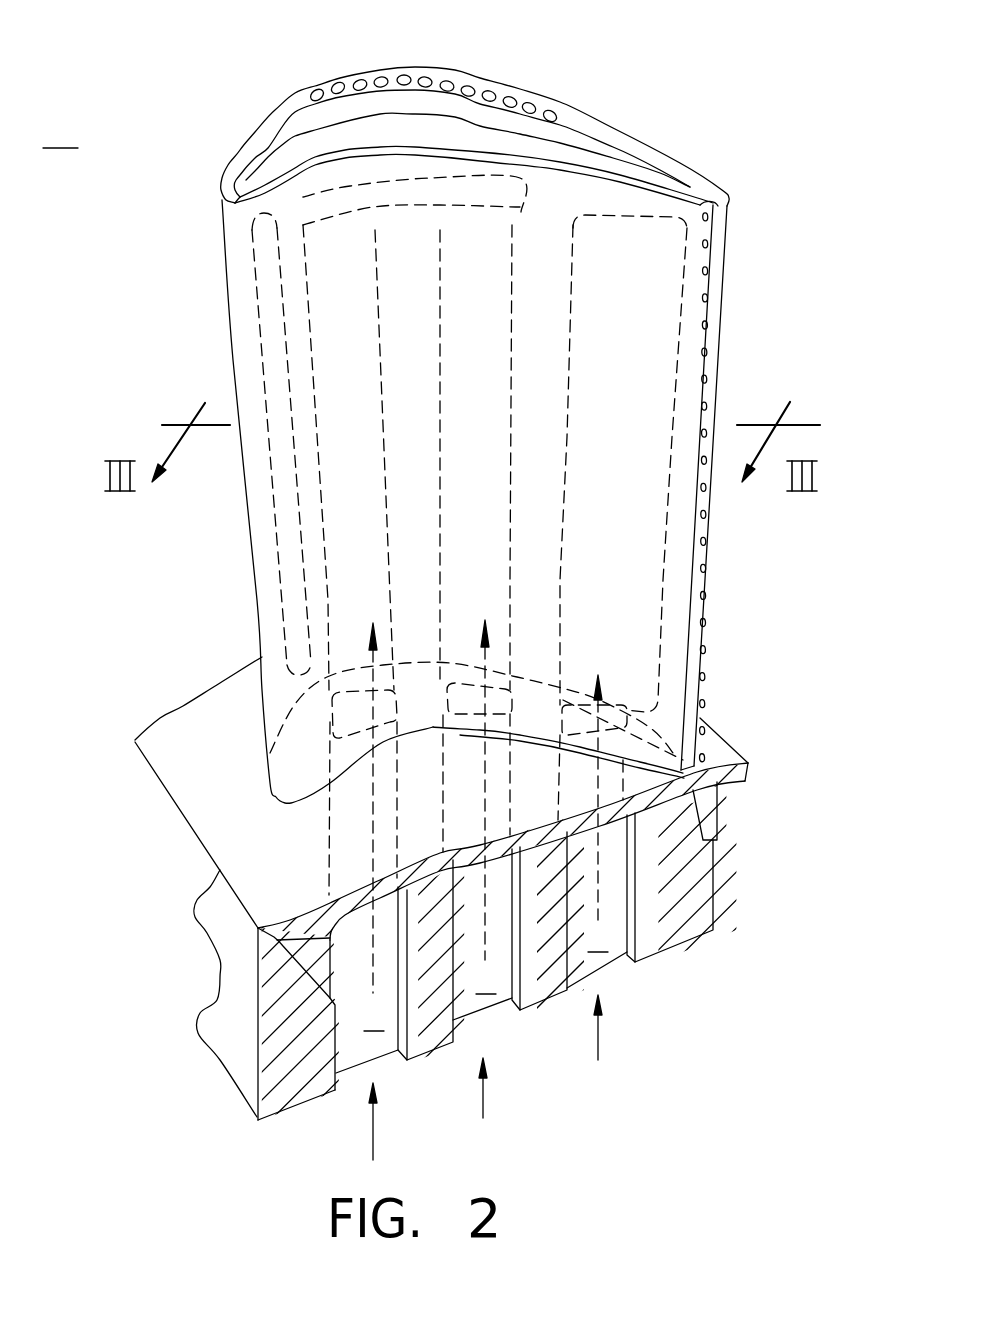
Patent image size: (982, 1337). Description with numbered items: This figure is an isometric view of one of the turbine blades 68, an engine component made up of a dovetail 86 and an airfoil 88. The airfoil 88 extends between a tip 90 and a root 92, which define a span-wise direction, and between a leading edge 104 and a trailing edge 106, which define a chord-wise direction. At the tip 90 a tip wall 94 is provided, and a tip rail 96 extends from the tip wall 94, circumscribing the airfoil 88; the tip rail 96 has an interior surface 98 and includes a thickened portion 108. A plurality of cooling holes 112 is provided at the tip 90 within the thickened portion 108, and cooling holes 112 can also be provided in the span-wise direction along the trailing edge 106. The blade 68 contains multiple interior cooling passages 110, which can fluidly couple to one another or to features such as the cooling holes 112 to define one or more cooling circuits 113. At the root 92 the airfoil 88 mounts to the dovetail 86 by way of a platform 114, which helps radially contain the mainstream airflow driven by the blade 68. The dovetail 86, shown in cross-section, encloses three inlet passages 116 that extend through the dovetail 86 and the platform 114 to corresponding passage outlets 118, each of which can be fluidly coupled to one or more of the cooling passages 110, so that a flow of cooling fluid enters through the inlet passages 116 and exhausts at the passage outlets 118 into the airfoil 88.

The turbine blade 68 is at (60, 132).
The dovetail 86 is at (237, 983).
The airfoil 88 is at (205, 392).
The tip 90 is at (258, 133).
The root 92 is at (662, 742).
The tip wall 94 is at (530, 128).
The tip rail 96 is at (298, 100).
The interior surface 98 is at (587, 158).
The leading edge 104 is at (250, 540).
The trailing edge 106 is at (717, 397).
The thickened portion 108 is at (568, 115).
The interior cooling passages 110 is at (470, 273).
The cooling holes 112 is at (333, 80).
The cooling circuits 113 is at (655, 308).
The platform 114 is at (183, 710).
The inlet passages 116 is at (373, 1140).
The passage outlets 118 is at (350, 692).